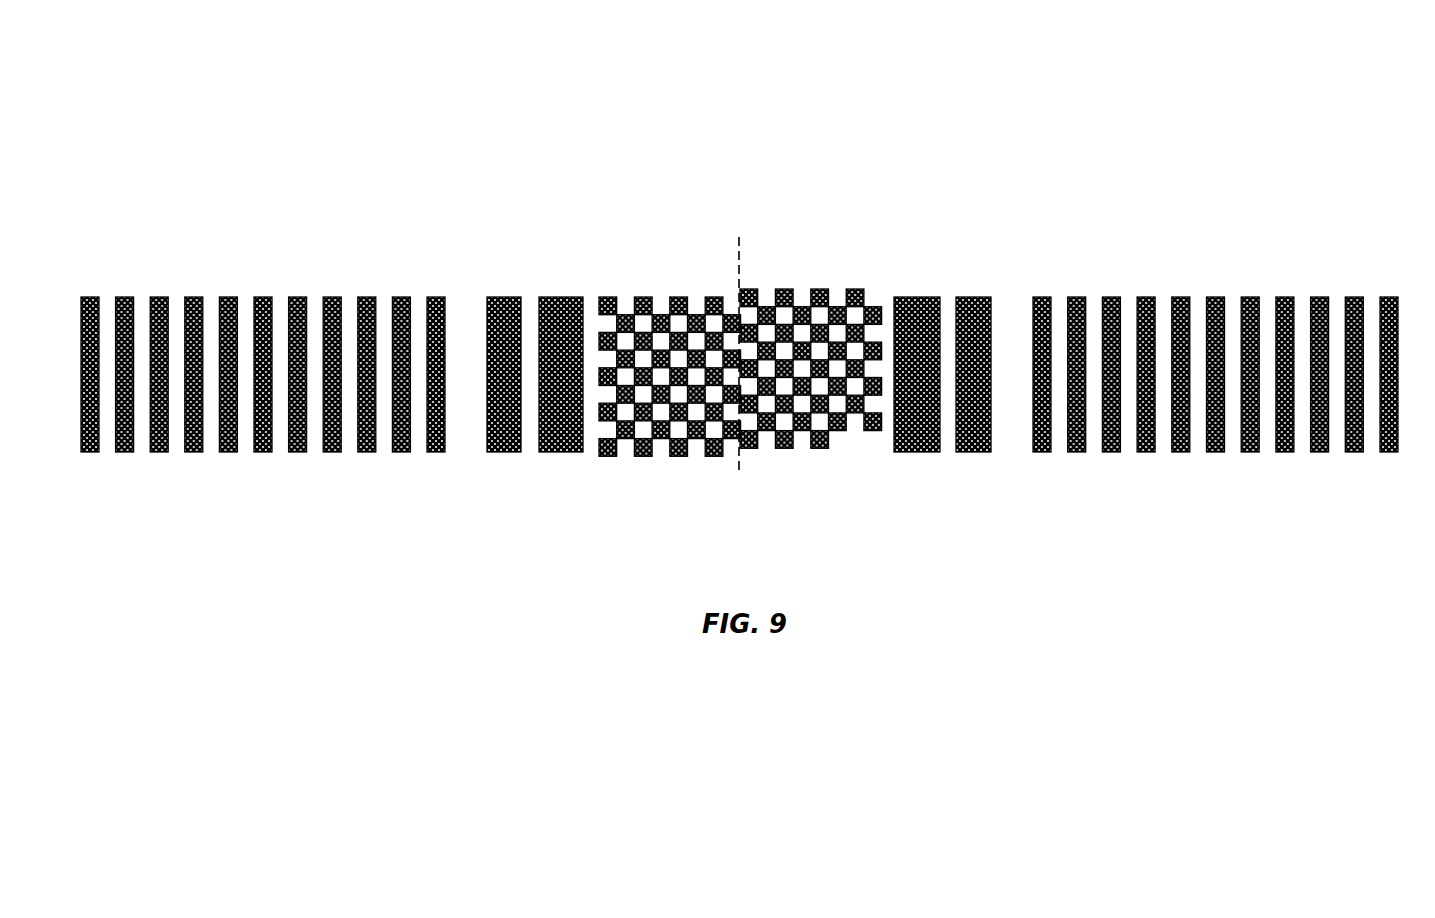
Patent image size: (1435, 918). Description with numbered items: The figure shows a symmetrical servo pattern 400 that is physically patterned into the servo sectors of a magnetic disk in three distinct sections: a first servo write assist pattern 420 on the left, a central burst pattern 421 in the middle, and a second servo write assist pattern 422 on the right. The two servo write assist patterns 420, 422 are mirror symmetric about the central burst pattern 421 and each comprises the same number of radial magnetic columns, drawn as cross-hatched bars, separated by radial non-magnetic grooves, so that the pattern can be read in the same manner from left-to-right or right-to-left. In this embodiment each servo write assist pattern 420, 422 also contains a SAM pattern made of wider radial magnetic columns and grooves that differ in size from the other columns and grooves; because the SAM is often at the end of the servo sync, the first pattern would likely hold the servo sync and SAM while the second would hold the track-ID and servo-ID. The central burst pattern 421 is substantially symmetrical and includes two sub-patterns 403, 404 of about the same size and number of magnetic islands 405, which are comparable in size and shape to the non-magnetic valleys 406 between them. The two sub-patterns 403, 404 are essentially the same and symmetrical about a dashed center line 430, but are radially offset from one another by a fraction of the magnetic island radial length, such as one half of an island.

The symmetrical servo pattern 400 is at (244, 90).
The first servo write assist pattern 420 is at (601, 250).
The central burst pattern 421 is at (879, 250).
The second servo write assist pattern 422 is at (1400, 250).
The center line 430 is at (739, 240).
The first sub-pattern 403 is at (739, 270).
The second sub-pattern 404 is at (879, 270).
The magnetic islands 405 is at (614, 448).
The non-magnetic valleys 406 is at (697, 447).